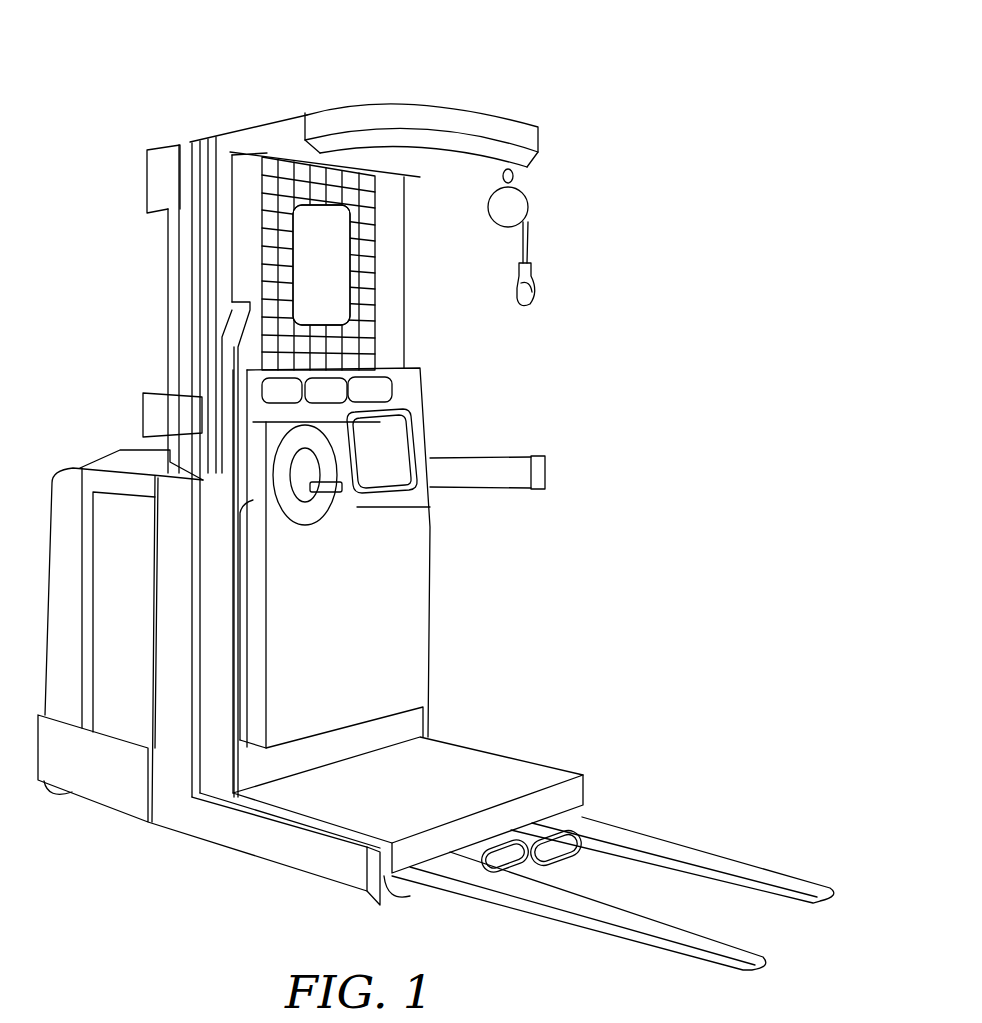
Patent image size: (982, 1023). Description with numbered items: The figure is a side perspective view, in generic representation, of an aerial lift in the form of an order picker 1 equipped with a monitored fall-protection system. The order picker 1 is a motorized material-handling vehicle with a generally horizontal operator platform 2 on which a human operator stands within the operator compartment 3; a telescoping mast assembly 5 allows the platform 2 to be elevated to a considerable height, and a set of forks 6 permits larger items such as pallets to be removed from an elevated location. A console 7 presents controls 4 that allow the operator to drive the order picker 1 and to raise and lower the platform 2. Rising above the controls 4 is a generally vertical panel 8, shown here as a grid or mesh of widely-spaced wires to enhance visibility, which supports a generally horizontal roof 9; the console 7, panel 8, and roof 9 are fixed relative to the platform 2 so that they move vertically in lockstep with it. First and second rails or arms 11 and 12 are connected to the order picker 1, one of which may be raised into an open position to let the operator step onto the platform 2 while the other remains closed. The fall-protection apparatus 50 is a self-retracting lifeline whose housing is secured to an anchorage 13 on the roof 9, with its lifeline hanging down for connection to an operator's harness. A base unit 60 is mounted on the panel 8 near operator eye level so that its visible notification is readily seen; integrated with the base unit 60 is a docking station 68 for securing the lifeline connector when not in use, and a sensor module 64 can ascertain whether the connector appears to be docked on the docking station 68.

The order picker 1 is at (140, 60).
The operator platform 2 is at (475, 773).
The operator compartment 3 is at (454, 533).
The controls 4 is at (398, 439).
The telescoping mast assembly 5 is at (121, 316).
The forks 6 is at (685, 860).
The console 7 is at (414, 617).
The panel 8 is at (404, 208).
The roof 9 is at (415, 100).
The first rail 11 is at (233, 412).
The second rail 12 is at (540, 470).
The anchorage 13 is at (514, 173).
The fall-protection apparatus 50 is at (544, 226).
The base unit 60 is at (300, 262).
The sensor module 64 is at (345, 286).
The docking station 68 is at (340, 315).